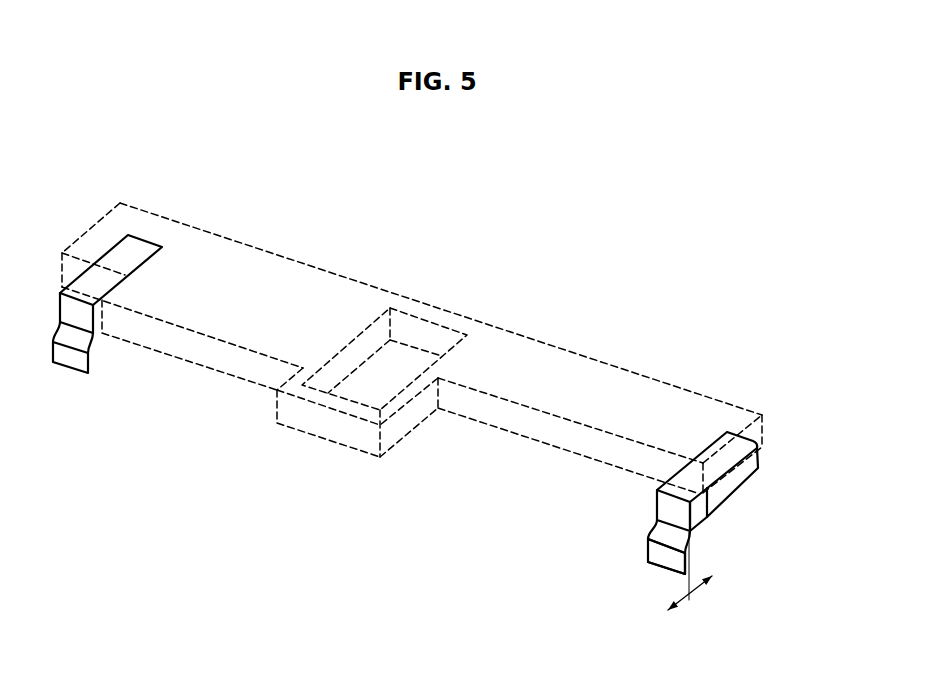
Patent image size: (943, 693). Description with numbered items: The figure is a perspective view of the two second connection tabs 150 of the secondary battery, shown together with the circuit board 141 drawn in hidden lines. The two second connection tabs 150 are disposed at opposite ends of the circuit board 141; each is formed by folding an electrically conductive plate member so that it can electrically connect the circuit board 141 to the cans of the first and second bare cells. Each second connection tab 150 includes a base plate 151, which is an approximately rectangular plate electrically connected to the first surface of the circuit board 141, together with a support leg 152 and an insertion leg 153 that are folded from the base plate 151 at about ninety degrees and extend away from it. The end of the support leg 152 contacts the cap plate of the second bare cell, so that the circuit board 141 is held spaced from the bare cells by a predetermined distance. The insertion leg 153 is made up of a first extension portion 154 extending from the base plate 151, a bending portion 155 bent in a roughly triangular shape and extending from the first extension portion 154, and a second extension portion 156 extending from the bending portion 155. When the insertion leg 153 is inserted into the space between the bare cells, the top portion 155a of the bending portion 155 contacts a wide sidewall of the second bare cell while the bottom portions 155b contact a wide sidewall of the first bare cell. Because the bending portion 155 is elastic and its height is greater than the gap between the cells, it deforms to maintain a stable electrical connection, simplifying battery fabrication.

The circuit board 141 is at (244, 242).
The second connection tab 150 is at (60, 387).
The base plate 151 is at (735, 432).
The support leg 152 is at (760, 468).
The insertion leg 153 is at (655, 522).
The first extension portion 154 is at (663, 507).
The bending portion 155 is at (650, 537).
The top portion 155a is at (692, 539).
The bottom portion 155b is at (690, 527).
The second extension portion 156 is at (665, 560).